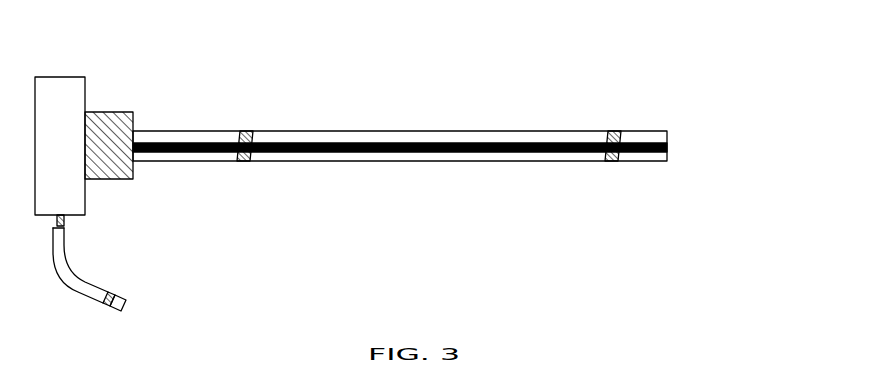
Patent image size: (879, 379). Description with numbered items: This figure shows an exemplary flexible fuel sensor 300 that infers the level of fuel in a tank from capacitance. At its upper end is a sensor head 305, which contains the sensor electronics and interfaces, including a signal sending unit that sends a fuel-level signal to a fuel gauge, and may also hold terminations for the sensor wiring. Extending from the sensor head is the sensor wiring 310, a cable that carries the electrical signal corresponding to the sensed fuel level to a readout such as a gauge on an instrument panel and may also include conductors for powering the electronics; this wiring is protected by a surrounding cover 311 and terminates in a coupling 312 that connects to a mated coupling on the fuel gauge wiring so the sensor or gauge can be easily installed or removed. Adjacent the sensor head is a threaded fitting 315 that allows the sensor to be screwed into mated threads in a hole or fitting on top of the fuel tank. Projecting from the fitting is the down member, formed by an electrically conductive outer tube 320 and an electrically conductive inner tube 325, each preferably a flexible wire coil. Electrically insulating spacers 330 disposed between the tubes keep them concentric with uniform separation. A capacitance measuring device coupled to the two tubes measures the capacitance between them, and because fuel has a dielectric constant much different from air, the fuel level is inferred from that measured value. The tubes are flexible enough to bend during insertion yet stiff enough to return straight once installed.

The flexible fuel sensor 300 is at (690, 74).
The sensor head 305 is at (105, 123).
The sensor wiring 310 is at (141, 266).
The cover 311 is at (96, 251).
The coupling 312 is at (154, 282).
The threaded fitting 315 is at (156, 120).
The outer tube 320 is at (400, 103).
The inner tube 325 is at (400, 106).
The spacers 330 is at (606, 161).